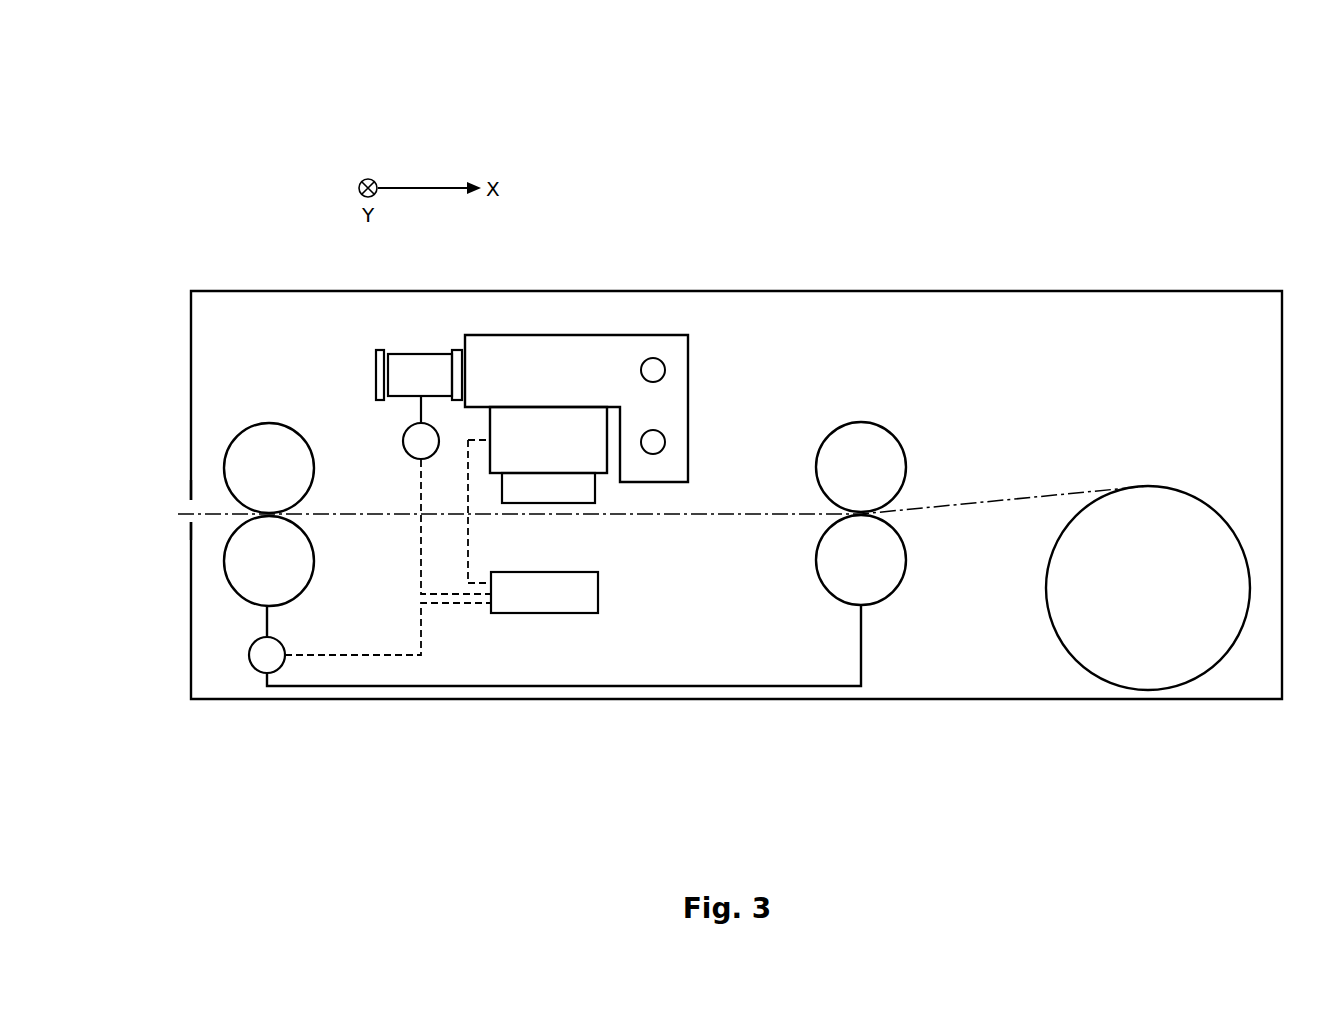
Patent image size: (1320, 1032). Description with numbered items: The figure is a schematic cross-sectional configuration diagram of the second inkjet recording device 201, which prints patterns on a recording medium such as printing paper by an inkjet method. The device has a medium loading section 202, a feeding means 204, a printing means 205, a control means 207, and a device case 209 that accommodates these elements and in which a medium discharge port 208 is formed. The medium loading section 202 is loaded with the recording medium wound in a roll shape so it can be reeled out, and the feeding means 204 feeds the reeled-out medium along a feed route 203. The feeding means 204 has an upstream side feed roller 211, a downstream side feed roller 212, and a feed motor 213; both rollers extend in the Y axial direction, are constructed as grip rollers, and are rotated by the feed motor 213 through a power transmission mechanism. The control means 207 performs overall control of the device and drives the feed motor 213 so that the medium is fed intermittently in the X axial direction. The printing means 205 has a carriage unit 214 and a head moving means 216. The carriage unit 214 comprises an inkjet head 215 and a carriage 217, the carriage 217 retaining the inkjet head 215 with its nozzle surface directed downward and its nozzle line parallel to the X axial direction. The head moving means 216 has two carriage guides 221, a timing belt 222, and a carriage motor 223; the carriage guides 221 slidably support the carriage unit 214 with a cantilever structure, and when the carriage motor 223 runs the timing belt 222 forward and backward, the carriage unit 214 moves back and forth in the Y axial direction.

The second inkjet recording device 201 is at (793, 128).
The medium loading section 202 is at (1246, 672).
The feed route 203 is at (1005, 500).
The feeding means 204 is at (208, 770).
The printing means 205 is at (797, 196).
The control means 207 is at (599, 598).
The medium discharge port 208 is at (190, 500).
The device case 209 is at (960, 700).
The upstream side feed roller 211 is at (888, 620).
The downstream side feed roller 212 is at (243, 618).
The feed motor 213 is at (258, 673).
The carriage unit 214 is at (840, 245).
The inkjet head 215 is at (587, 498).
The head moving means 216 is at (480, 245).
The carriage 217 is at (683, 340).
The carriage guides 221 is at (650, 440).
The timing belt 222 is at (380, 350).
The carriage motor 223 is at (412, 423).